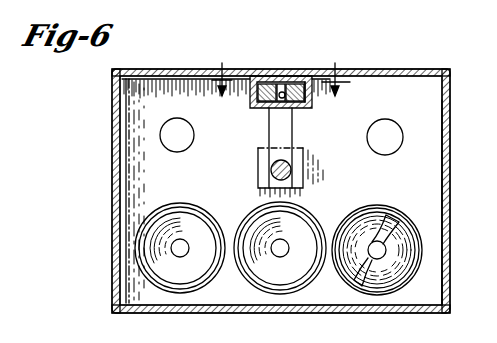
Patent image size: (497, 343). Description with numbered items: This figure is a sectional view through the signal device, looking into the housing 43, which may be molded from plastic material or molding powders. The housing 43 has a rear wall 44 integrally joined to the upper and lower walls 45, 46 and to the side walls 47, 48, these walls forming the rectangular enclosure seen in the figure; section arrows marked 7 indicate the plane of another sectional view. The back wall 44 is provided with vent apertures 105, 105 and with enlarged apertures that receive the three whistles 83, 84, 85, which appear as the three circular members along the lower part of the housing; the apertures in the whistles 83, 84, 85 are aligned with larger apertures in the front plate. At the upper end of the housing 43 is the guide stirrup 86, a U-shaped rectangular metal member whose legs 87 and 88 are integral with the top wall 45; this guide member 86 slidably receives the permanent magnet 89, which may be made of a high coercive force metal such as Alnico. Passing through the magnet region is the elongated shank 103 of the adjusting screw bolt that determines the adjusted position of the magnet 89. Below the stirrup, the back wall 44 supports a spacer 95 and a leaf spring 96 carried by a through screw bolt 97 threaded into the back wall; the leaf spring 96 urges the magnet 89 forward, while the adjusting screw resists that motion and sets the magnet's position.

The section line 7- 7 is at (278, 74).
The housing 43 is at (448, 298).
The rear wall 44 is at (436, 163).
The upper wall 45 is at (378, 69).
The lower wall 46 is at (357, 314).
The side wall 47 is at (112, 218).
The side wall 48 is at (448, 214).
The whistle 83 is at (196, 222).
The whistle 84 is at (297, 222).
The whistle 85 is at (378, 213).
The guide stirrup 86 is at (253, 104).
The leg 87 is at (310, 103).
The leg 88 is at (258, 80).
The permanent magnet 89 is at (301, 80).
The spacer 95 is at (303, 160).
The leaf spring 96 is at (291, 132).
The through screw bolt 97 is at (272, 170).
The elongated shank 103 is at (281, 92).
The vent apertures 105 is at (173, 128).